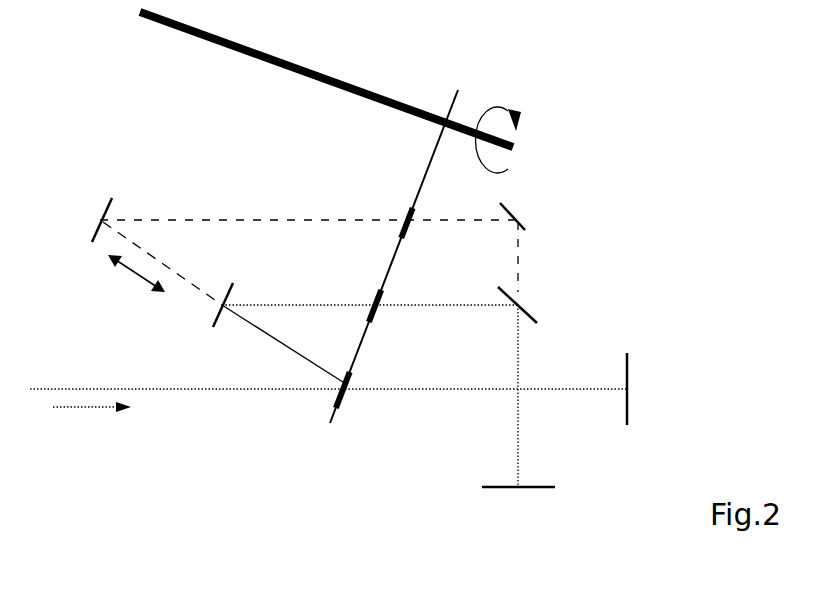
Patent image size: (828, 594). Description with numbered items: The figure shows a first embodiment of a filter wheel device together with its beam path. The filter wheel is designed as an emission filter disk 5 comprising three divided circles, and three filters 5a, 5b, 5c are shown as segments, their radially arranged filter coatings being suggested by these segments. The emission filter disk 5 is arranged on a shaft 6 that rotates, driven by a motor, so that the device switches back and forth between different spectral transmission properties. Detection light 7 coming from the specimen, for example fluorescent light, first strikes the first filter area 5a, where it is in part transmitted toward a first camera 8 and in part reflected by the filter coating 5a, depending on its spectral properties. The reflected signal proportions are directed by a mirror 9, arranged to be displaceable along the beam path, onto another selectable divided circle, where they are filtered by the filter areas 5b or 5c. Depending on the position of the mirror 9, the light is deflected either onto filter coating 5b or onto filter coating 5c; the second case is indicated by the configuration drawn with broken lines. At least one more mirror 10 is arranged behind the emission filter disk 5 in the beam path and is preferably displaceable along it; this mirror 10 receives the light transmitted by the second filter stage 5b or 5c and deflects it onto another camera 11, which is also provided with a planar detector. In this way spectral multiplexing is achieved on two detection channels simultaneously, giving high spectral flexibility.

The emission filter disk 5 is at (452, 100).
The first filter area 5a is at (335, 400).
The filter area 5b is at (376, 312).
The filter area 5c is at (408, 208).
The shaft 6 is at (170, 25).
The detection light 7 is at (185, 395).
The first camera 8 is at (627, 367).
The mirror 9 is at (105, 210).
The mirror 10 is at (530, 231).
The camera 11 is at (538, 492).